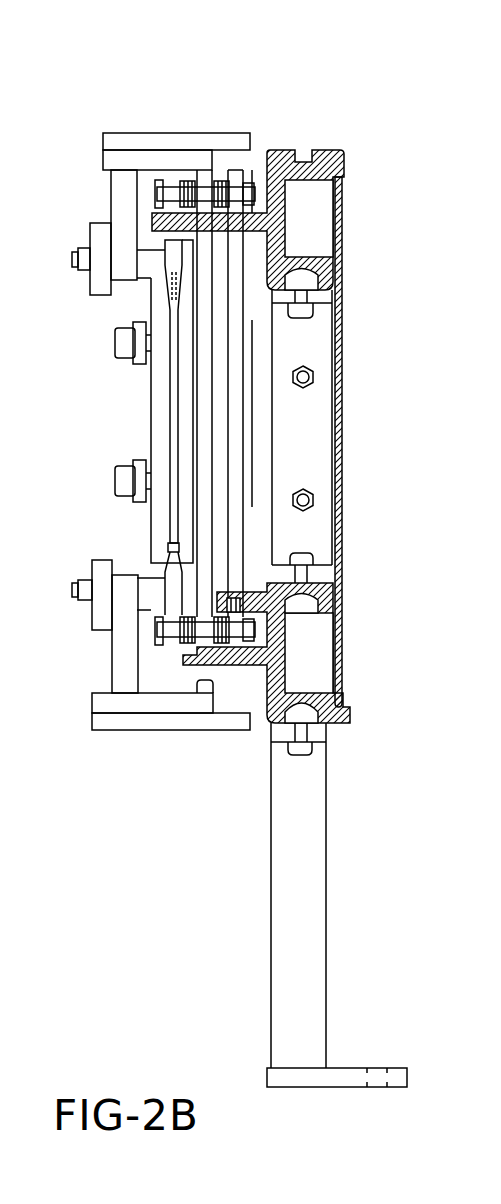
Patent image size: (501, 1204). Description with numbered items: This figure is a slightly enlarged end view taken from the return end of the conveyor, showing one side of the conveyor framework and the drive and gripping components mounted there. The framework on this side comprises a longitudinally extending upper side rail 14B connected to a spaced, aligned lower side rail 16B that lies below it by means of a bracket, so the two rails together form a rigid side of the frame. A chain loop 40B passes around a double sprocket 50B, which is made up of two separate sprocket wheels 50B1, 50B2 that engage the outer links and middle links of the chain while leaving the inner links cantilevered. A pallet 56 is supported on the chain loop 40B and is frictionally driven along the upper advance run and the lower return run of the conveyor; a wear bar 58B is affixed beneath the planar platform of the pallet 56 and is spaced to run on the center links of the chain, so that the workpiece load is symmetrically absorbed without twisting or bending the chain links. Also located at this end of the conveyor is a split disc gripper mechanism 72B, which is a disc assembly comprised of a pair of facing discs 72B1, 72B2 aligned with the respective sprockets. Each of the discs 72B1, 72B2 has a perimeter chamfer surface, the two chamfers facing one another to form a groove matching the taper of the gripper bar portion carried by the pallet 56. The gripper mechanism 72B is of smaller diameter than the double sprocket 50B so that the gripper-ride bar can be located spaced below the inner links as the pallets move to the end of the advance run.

The upper side rail 14B is at (323, 147).
The lower side rail 16B is at (347, 732).
The chain loop 40B is at (245, 170).
The double sprocket 50B is at (252, 420).
The sprocket wheel 50B1 is at (237, 372).
The sprocket wheel 50B2 is at (205, 488).
The pallet 56 is at (170, 100).
The wear bar 58B is at (215, 174).
The split disc gripper mechanism 72B is at (105, 427).
The disc 72B1 is at (150, 383).
The disc 72B2 is at (177, 510).